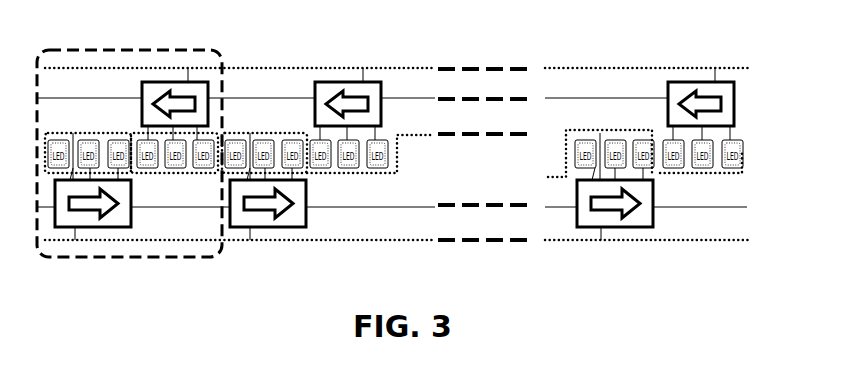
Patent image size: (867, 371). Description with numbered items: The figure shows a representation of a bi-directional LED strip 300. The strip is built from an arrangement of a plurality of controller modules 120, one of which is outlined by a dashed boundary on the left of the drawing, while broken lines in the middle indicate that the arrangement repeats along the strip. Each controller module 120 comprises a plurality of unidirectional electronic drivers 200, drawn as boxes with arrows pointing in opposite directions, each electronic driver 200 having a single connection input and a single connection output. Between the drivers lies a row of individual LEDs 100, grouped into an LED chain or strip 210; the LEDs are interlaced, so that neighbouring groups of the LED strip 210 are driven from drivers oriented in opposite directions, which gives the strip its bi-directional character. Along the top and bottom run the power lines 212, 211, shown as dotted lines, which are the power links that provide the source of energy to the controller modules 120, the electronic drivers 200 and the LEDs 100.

The bi-directional LED strip 300 is at (385, 48).
The controller module 120 is at (145, 48).
The LED 100 is at (72, 133).
The electronic driver 200 is at (210, 90).
The LED strip 210 is at (297, 127).
The power line 212 is at (692, 67).
The power line 211 is at (692, 238).